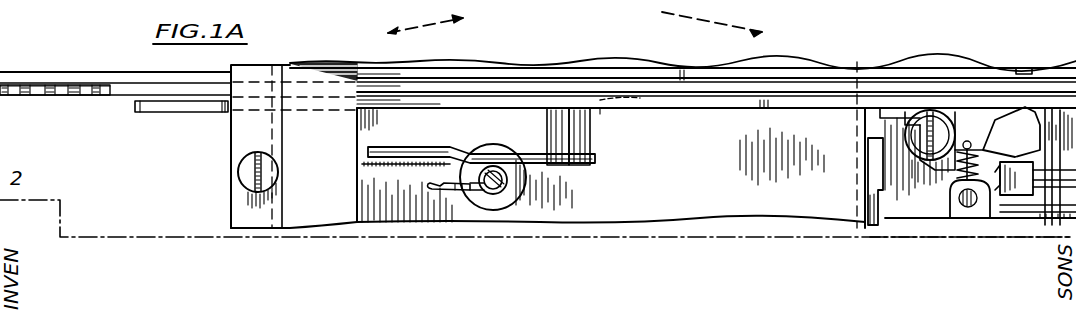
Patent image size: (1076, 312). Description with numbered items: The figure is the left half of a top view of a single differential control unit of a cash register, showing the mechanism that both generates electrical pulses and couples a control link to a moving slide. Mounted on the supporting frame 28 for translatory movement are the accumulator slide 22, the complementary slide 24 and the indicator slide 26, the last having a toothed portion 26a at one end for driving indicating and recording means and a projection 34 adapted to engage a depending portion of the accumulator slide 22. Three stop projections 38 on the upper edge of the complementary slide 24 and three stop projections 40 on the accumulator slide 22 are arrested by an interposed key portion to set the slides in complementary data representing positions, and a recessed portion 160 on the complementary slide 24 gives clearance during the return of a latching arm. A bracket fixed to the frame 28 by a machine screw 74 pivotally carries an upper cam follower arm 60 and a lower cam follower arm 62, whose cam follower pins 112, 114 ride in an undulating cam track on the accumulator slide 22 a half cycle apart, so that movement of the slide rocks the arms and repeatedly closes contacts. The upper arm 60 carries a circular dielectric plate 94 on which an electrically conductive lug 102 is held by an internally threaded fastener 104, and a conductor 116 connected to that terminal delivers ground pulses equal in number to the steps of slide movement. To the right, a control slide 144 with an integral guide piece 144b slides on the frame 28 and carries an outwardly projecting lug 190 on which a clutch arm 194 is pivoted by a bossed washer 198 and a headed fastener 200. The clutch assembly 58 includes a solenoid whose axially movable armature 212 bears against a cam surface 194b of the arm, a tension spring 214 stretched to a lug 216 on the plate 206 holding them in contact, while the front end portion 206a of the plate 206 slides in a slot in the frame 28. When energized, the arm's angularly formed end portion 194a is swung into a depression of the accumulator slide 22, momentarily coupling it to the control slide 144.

The complementary slide 24 is at (100, 74).
The indicator slide 26 is at (120, 90).
The toothed portion 26a is at (45, 100).
The accumulator slide 22 is at (166, 108).
The supporting frame 28 is at (236, 191).
The machine screw 74 is at (245, 166).
The upper cam follower arm 60 is at (388, 147).
The lower cam follower arm 62 is at (418, 166).
The cam follower pin 114 is at (555, 130).
The cam follower pin 112 is at (586, 130).
The projection 34 is at (636, 110).
The stop projections 38 is at (696, 68).
The second circular dielectric plate 94 is at (486, 210).
The internally threaded fastener 104 is at (494, 200).
The electrically conductive lug 102 is at (484, 186).
The conductor 116 is at (448, 188).
The stop projections 40 is at (802, 112).
The outwardly projecting lug 190 is at (905, 124).
The headed fastener 200 is at (920, 125).
The guide piece 144b is at (908, 112).
The clutch arm 194 is at (962, 128).
The recessed portion 160 is at (1024, 70).
The control slide 144 is at (1052, 118).
The angularly formed end portion 194a is at (1027, 128).
The bossed washer 198 is at (920, 158).
The tension spring 214 is at (958, 176).
The front end portion 206a is at (855, 186).
The lug 216 is at (958, 210).
The cam surface 194b is at (997, 178).
The armature 212 is at (1012, 196).
The plate 206 is at (1058, 212).
The clutch assembly 58 is at (924, 238).